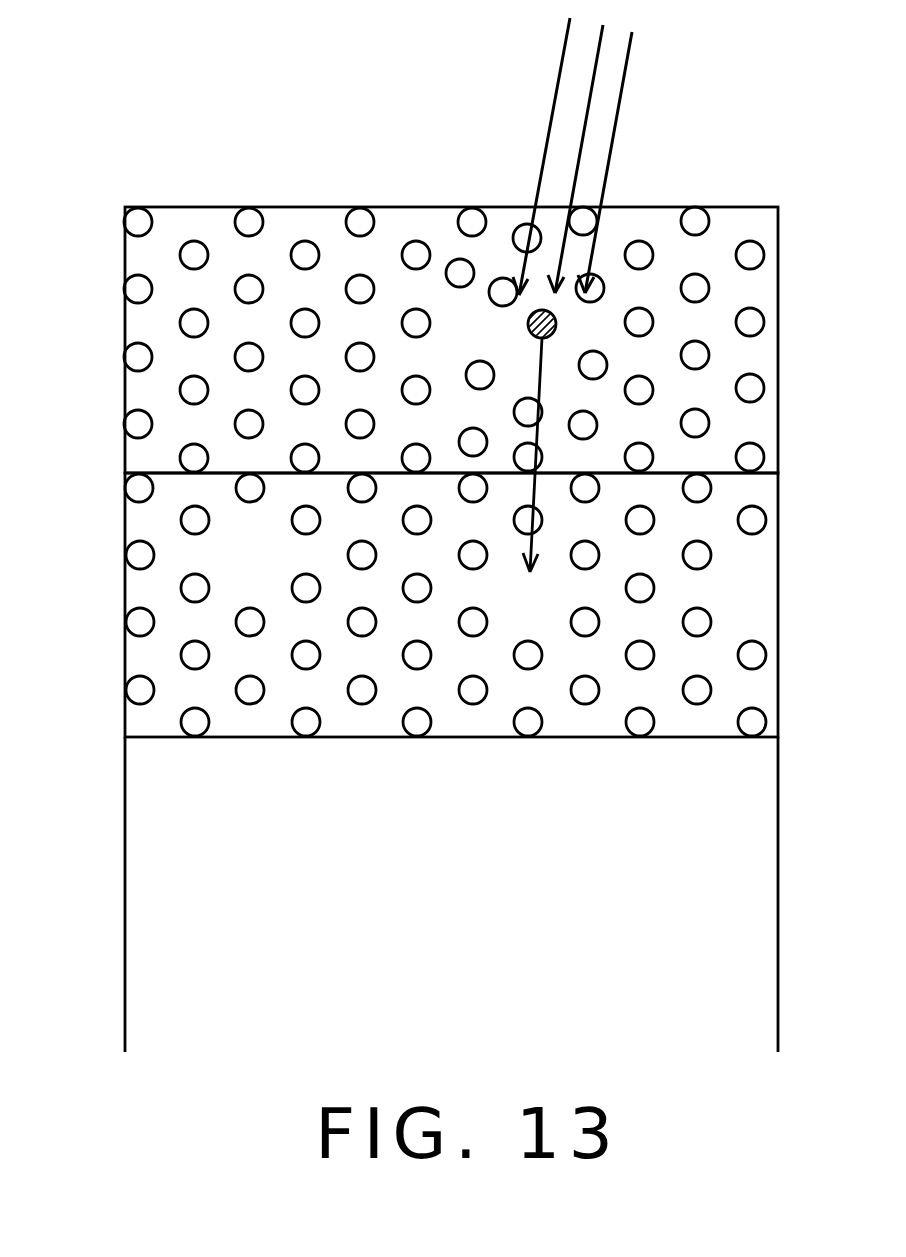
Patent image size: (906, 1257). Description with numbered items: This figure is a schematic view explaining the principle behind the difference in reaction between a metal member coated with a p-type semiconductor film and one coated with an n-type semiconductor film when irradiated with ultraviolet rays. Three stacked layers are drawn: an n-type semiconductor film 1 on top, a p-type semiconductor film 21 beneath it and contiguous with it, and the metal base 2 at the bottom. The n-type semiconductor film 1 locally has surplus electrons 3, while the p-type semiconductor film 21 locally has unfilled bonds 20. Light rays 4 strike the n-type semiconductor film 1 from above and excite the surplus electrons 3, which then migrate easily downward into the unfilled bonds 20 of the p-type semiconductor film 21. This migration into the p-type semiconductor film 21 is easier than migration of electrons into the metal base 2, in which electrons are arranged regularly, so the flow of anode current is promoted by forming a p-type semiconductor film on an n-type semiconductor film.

The n-type semiconductor film 1 is at (165, 333).
The p-type semiconductor film 21 is at (165, 610).
The metal base 2 is at (163, 840).
The surplus electrons 3 is at (527, 322).
The light rays 4 is at (543, 101).
The unfilled bonds 20 is at (530, 481).